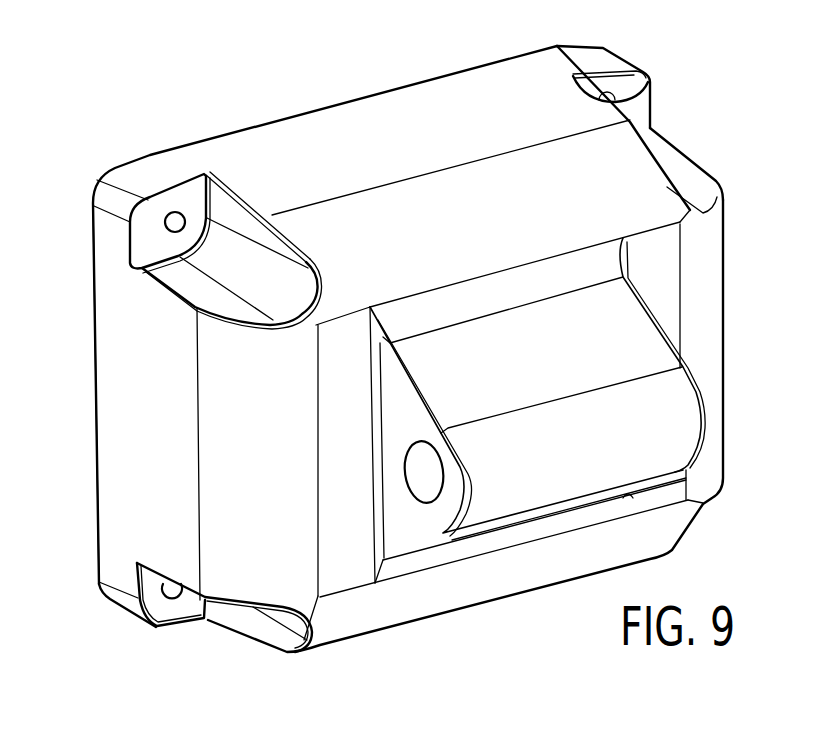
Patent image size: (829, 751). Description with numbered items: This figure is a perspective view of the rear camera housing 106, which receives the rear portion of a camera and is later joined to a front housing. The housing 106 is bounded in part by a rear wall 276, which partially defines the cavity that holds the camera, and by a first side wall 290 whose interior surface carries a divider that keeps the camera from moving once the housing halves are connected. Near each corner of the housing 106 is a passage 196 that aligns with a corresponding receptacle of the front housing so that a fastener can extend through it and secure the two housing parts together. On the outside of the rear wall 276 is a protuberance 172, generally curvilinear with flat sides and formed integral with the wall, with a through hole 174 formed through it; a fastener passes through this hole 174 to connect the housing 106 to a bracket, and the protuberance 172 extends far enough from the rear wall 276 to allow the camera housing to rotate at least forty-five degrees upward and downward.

The rear camera housing 106 is at (683, 152).
The passage 196 is at (172, 215).
The rear wall 276 is at (652, 280).
The first side wall 290 is at (116, 443).
The protuberance 172 is at (533, 485).
The through hole 174 is at (427, 482).